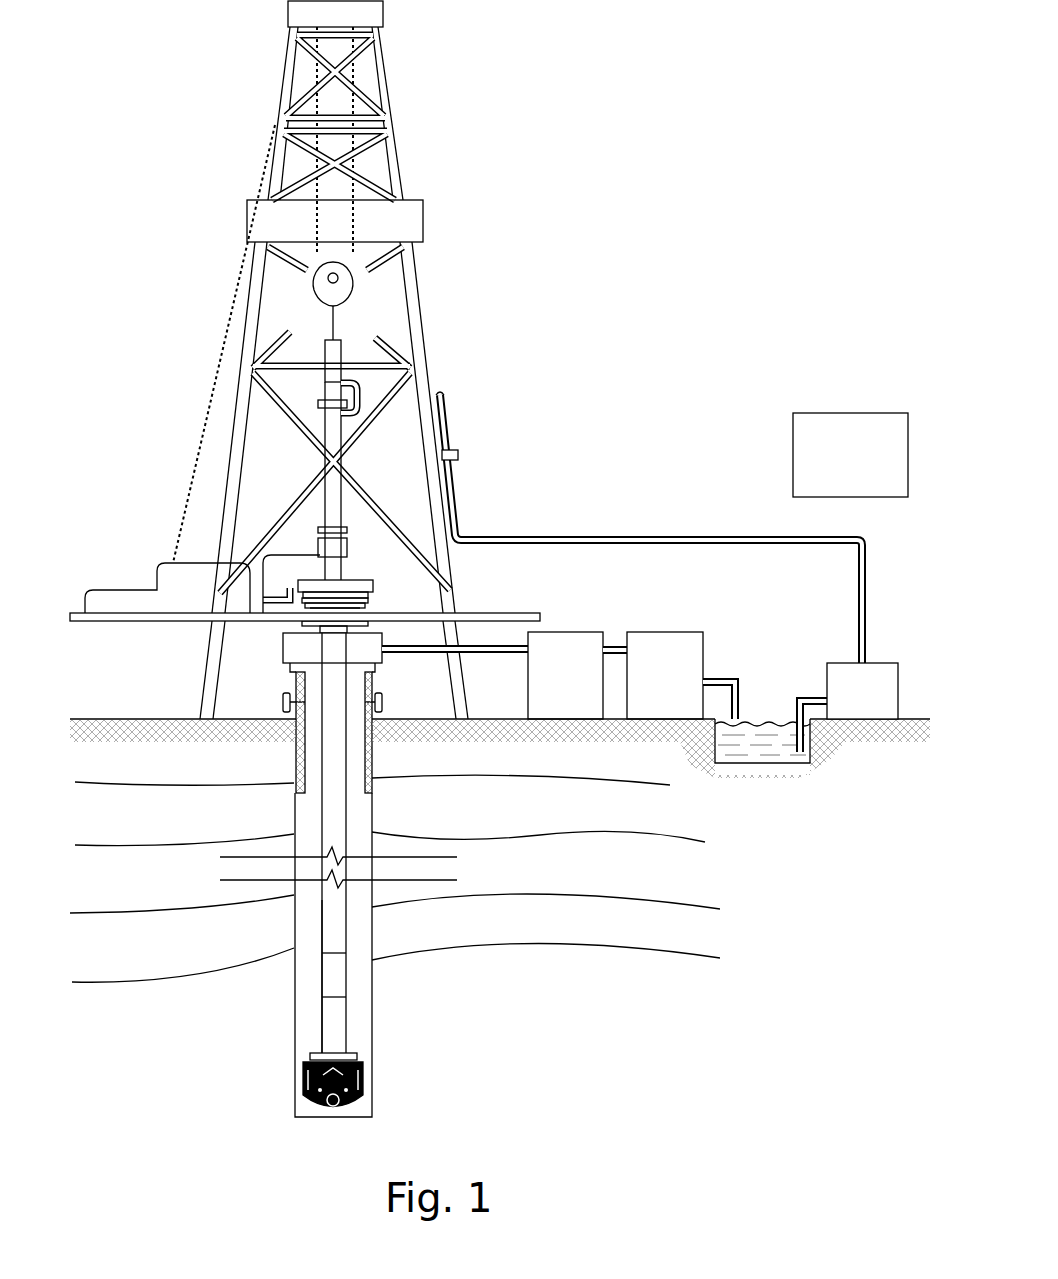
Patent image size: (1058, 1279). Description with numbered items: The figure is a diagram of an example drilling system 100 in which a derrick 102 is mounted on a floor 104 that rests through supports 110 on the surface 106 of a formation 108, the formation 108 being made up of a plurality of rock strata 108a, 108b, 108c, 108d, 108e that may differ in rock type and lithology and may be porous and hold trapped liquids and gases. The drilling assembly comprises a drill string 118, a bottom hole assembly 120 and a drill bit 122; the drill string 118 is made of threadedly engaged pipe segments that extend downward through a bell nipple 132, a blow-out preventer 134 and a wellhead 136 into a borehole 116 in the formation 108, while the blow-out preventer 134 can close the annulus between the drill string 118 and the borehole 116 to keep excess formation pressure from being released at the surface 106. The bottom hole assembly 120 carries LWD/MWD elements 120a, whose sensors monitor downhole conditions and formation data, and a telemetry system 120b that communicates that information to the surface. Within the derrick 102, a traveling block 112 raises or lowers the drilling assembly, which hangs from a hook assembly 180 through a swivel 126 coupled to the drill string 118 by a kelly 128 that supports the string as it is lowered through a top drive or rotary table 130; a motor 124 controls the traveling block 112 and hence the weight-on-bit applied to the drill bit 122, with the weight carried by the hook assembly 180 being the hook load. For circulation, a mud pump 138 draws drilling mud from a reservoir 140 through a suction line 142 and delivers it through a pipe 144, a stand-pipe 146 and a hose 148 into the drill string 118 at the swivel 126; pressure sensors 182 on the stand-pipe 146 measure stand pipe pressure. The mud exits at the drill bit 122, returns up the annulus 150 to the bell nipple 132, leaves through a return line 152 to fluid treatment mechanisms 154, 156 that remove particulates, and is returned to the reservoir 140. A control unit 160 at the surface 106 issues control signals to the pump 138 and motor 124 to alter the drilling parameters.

The drilling system 100 is at (688, 86).
The derrick 102 is at (392, 113).
The floor 104 is at (68, 616).
The surface 106 is at (97, 718).
The formation 108 is at (690, 880).
The rock stratum 108a is at (140, 773).
The rock stratum 108b is at (140, 833).
The rock stratum 108c is at (140, 893).
The rock stratum 108d is at (140, 953).
The rock stratum 108e is at (140, 1016).
The supports 110 is at (208, 657).
The traveling block 112 is at (318, 280).
The borehole 116 is at (372, 925).
The drill string 118 is at (347, 813).
The bottom hole assembly 120 is at (295, 1012).
The LWD/MWD elements 120a is at (346, 1017).
The telemetry system 120b is at (346, 975).
The drill bit 122 is at (365, 1080).
The motor 124 is at (120, 590).
The swivel 126 is at (325, 347).
The kelly 128 is at (322, 414).
The rotary table 130 is at (305, 580).
The bell nipple 132 is at (283, 648).
The blow-out preventer 134 is at (290, 703).
The wellhead 136 is at (297, 755).
The mud pump 138 is at (884, 705).
The reservoir 140 is at (765, 750).
The suction line 142 is at (793, 745).
The pipe 144 is at (598, 538).
The stand-pipe 146 is at (448, 410).
The hose 148 is at (410, 385).
The annulus 150 is at (355, 837).
The return line 152 is at (410, 652).
The fluid treatment mechanism 154 is at (565, 632).
The fluid treatment mechanism 156 is at (665, 632).
The control unit 160 is at (871, 467).
The hook assembly 180 is at (330, 306).
The pressure sensors 182 is at (458, 454).